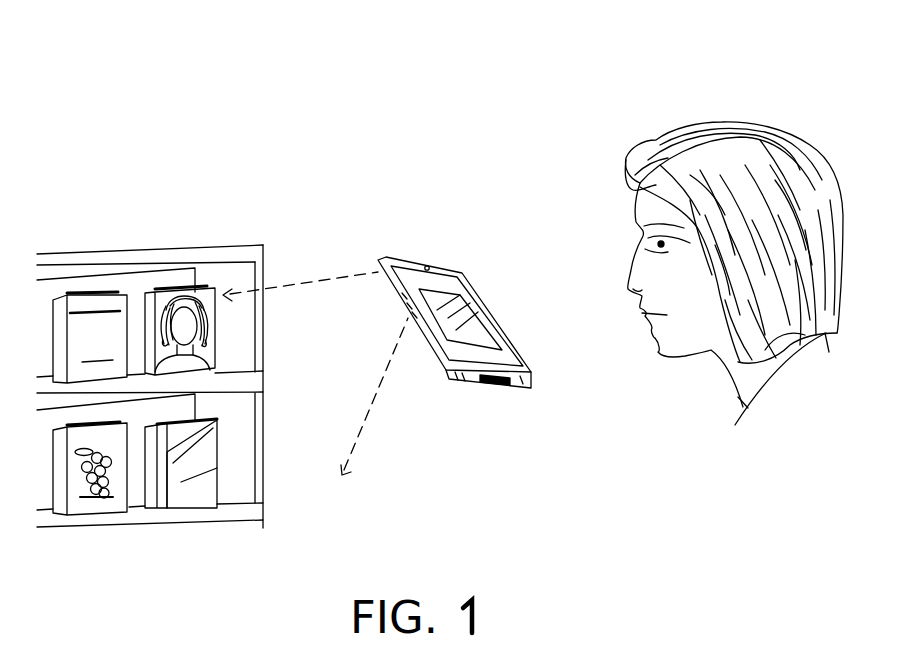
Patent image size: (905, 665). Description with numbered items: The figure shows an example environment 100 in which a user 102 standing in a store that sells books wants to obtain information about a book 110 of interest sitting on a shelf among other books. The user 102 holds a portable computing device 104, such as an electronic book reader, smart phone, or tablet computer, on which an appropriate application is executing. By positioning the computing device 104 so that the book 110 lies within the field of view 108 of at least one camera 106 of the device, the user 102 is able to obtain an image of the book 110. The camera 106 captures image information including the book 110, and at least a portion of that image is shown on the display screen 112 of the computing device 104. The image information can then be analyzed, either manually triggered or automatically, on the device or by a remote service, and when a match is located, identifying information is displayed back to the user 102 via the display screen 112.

The environment 100 is at (110, 105).
The user 102 is at (587, 180).
The computing device 104 is at (457, 383).
The camera 106 is at (426, 266).
The field of view 108 is at (396, 349).
The book 110 is at (200, 503).
The display screen 112 is at (476, 319).